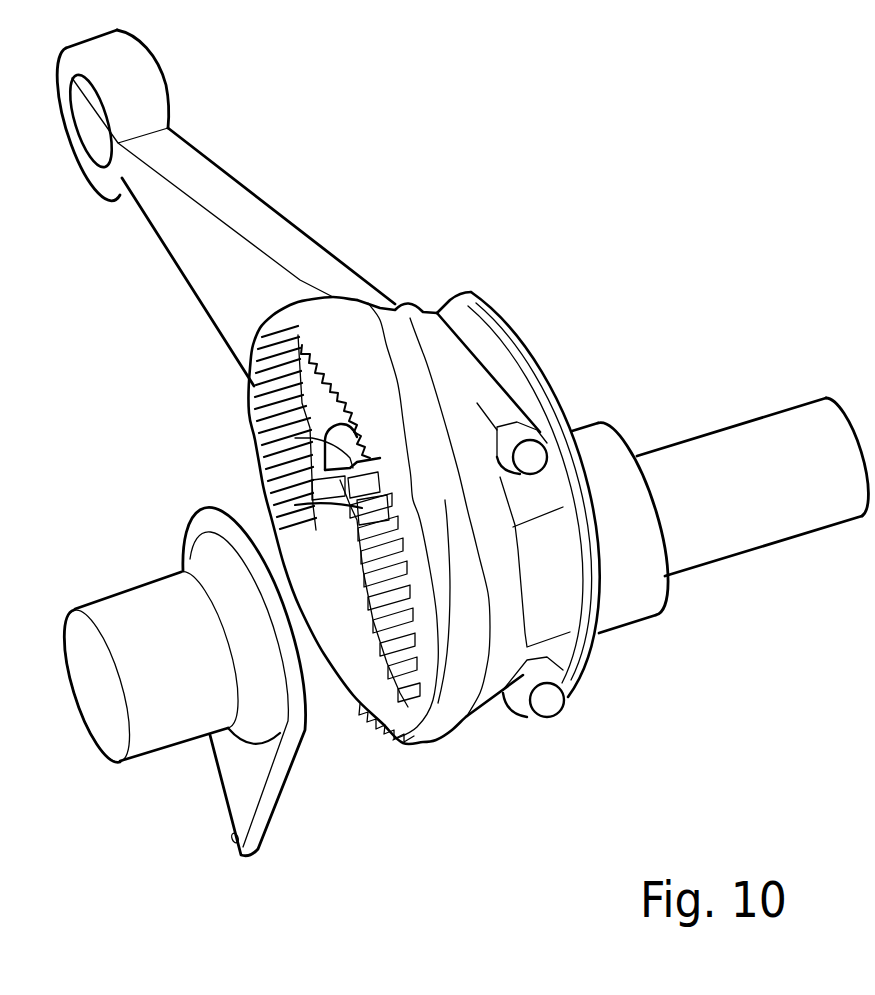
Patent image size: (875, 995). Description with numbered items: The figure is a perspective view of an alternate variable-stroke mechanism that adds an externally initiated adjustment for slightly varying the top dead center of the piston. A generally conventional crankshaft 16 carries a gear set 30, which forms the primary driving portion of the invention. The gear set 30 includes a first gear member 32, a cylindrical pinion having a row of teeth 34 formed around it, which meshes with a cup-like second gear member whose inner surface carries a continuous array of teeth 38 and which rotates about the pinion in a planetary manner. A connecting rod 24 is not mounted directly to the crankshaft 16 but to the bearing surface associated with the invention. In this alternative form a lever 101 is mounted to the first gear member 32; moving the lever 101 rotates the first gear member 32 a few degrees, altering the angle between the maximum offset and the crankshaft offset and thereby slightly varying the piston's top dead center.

The crankshaft 16 is at (747, 447).
The connecting rod 24 is at (327, 280).
The gear set 30 is at (498, 286).
The first gear member 32 is at (380, 727).
The teeth 34 is at (300, 440).
The teeth 38 is at (267, 387).
The lever 101 is at (238, 777).